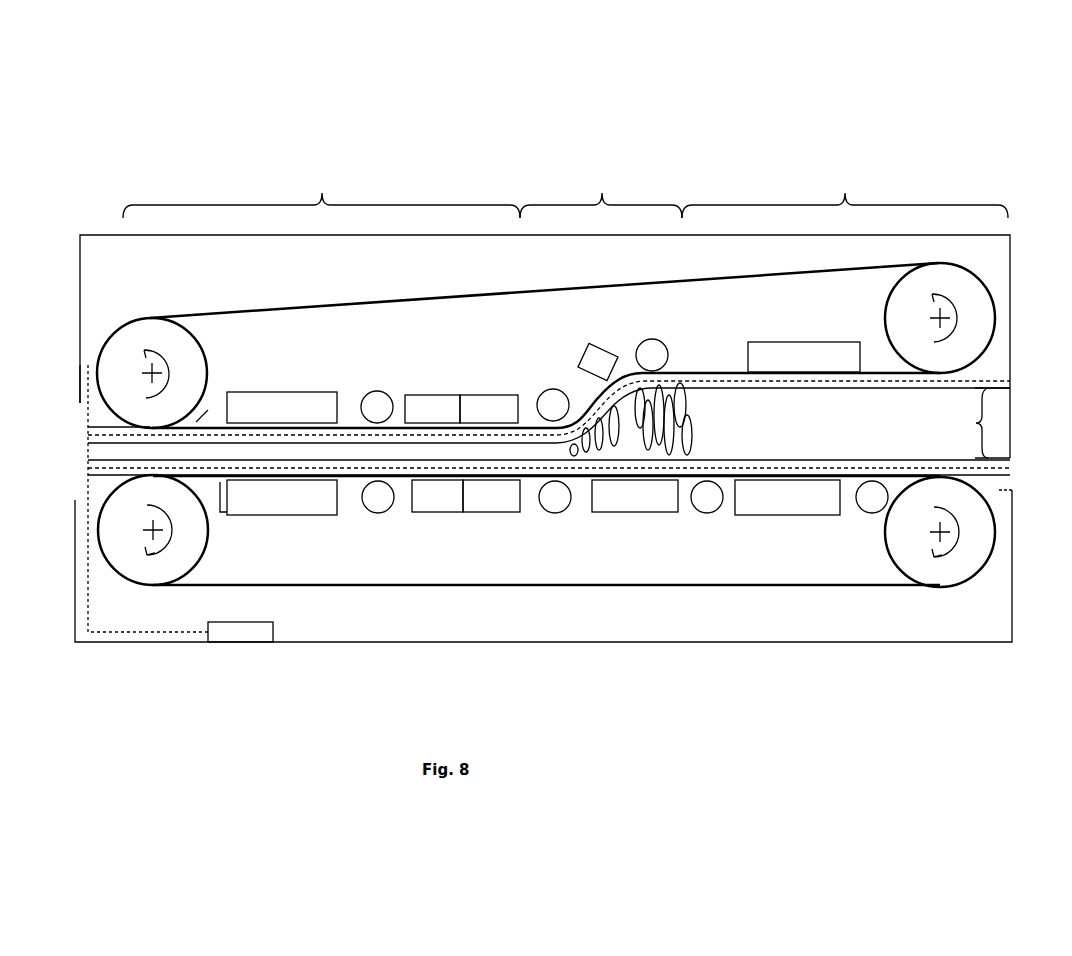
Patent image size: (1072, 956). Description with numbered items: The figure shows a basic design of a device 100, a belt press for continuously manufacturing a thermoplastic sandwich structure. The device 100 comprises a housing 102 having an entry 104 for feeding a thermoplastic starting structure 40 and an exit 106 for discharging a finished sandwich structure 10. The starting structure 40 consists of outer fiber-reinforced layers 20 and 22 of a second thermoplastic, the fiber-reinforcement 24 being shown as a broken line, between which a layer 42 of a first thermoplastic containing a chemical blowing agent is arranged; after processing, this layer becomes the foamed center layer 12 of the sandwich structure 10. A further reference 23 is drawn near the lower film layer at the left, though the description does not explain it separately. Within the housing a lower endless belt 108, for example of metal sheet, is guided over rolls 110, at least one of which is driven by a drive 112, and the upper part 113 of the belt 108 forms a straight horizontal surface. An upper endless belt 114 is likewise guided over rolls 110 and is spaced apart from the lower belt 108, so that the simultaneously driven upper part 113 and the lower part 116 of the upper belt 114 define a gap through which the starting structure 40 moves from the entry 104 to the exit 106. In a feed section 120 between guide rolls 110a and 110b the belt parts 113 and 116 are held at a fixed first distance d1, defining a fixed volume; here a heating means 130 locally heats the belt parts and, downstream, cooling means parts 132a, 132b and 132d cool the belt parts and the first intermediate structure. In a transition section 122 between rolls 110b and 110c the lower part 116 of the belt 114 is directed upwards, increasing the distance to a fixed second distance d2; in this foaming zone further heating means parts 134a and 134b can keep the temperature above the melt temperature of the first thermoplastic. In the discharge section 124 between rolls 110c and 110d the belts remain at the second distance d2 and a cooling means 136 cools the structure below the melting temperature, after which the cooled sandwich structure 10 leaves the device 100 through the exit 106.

The device 100 is at (970, 188).
The housing 102 is at (90, 235).
The entry 104 is at (68, 393).
The exit 106 is at (1012, 365).
The lower endless belt 108 is at (600, 590).
The rolls 110 is at (378, 395).
The guide roll 110a is at (125, 337).
The guide roll 110b is at (553, 392).
The guide roll 110c is at (668, 345).
The guide roll 110d is at (975, 292).
The drive 112 is at (260, 622).
The upper part of belt 113 is at (222, 514).
The upper endless belt 114 is at (413, 302).
The lower part of upper belt 116 is at (198, 420).
The feed section 120 is at (321, 187).
The transition section 122 is at (601, 187).
The discharge section 124 is at (845, 187).
The heating means 130 is at (277, 402).
The cooling means part 132a is at (433, 400).
The cooling means part 132b is at (495, 400).
The cooling means part 132d is at (490, 512).
The further heating means part 134a is at (597, 354).
The further heating means part 134b is at (636, 512).
The cooling means 136 is at (793, 352).
The sandwich structure 10 is at (1034, 455).
The center layer 12 is at (978, 423).
The outer fiber-reinforced layer 20 is at (85, 430).
The outer fiber-reinforced layer 22 is at (997, 468).
The lower film edge 23 is at (113, 477).
The fiber-reinforcement 24 is at (106, 428).
The starting structure 40 is at (130, 498).
The layer of first thermoplastic 42 is at (85, 472).
The first distance d1 is at (48, 432).
The second distance d2 is at (1052, 450).